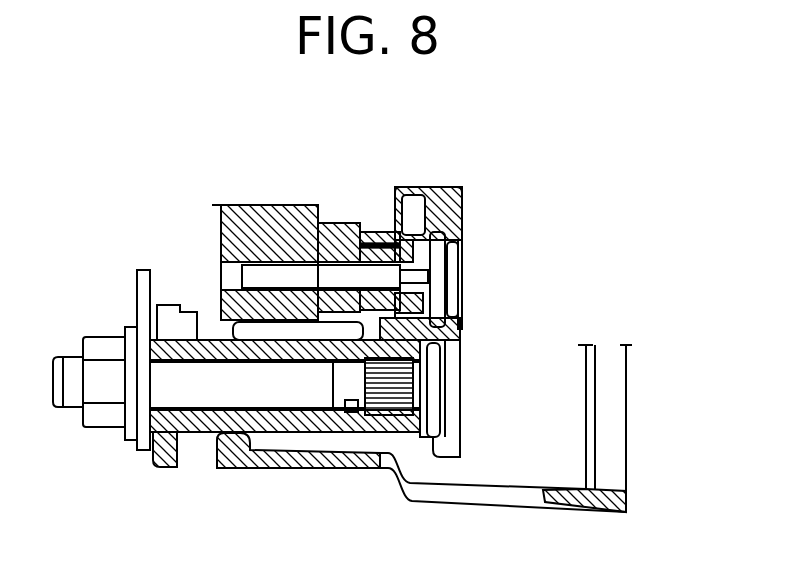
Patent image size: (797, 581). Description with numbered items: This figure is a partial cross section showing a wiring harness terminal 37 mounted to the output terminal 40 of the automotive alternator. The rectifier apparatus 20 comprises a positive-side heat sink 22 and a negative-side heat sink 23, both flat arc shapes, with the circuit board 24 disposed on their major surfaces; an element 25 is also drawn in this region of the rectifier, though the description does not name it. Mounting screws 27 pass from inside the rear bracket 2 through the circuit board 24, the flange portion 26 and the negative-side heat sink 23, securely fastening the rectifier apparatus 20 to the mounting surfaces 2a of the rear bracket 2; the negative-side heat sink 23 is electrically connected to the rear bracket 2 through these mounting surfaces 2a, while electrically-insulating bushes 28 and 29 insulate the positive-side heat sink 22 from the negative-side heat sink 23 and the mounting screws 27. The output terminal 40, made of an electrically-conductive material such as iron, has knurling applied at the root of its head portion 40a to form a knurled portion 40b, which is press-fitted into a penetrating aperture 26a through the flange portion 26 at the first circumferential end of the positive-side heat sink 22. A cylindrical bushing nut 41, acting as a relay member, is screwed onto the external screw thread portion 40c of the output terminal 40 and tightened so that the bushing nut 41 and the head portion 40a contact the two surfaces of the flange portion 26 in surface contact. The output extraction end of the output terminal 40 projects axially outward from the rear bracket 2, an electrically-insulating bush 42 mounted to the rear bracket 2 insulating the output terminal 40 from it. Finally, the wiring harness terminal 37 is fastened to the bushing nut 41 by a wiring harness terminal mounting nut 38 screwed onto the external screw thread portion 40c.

The rear bracket 2 is at (231, 199).
The mounting surfaces 2a is at (324, 207).
The rectifier apparatus 20 is at (472, 247).
The positive-side heat sink 22 is at (382, 226).
The negative-side heat sink 23 is at (342, 220).
The circuit board 24 is at (463, 187).
The brake coil yoke 25 is at (438, 187).
The flange portion 26 is at (462, 333).
The penetrating aperture 26a is at (352, 412).
The mounting screws 27 is at (452, 277).
The electrically-insulating bush 28 is at (359, 219).
The electrically-insulating bush 29 is at (445, 240).
The wiring harness terminal 37 is at (134, 288).
The wiring harness terminal mounting nut 38 is at (95, 333).
The output terminal 40 is at (437, 387).
The head portion 40a is at (435, 367).
The knurled portion 40b is at (414, 402).
The external screw thread portion 40c is at (63, 410).
The bushing nut 41 is at (205, 419).
The electrically-insulating bush 42 is at (186, 302).